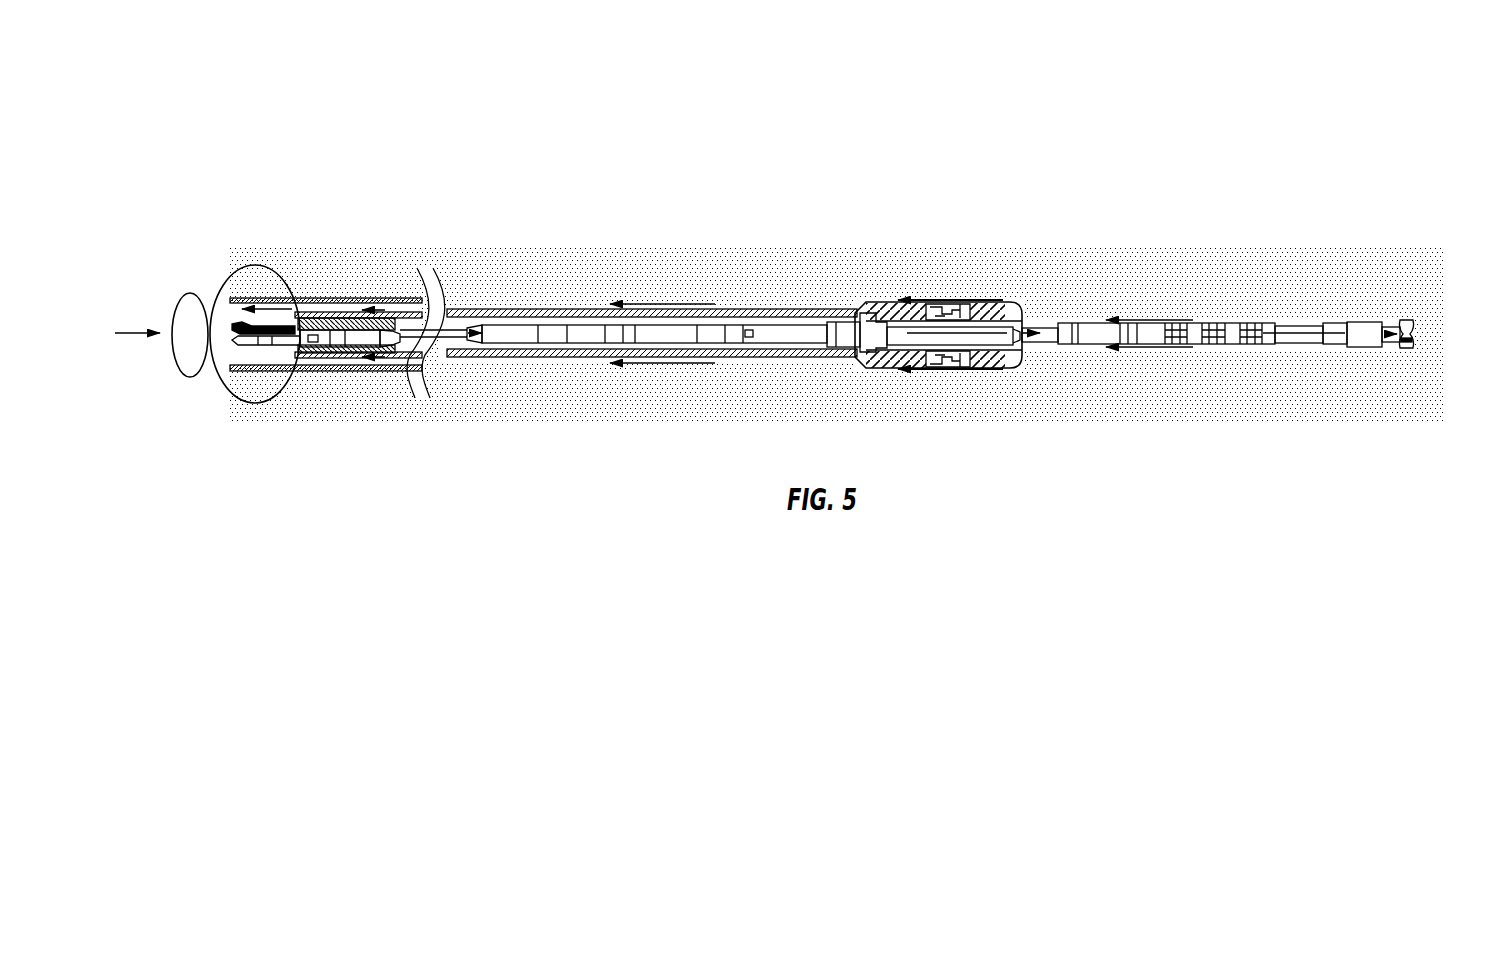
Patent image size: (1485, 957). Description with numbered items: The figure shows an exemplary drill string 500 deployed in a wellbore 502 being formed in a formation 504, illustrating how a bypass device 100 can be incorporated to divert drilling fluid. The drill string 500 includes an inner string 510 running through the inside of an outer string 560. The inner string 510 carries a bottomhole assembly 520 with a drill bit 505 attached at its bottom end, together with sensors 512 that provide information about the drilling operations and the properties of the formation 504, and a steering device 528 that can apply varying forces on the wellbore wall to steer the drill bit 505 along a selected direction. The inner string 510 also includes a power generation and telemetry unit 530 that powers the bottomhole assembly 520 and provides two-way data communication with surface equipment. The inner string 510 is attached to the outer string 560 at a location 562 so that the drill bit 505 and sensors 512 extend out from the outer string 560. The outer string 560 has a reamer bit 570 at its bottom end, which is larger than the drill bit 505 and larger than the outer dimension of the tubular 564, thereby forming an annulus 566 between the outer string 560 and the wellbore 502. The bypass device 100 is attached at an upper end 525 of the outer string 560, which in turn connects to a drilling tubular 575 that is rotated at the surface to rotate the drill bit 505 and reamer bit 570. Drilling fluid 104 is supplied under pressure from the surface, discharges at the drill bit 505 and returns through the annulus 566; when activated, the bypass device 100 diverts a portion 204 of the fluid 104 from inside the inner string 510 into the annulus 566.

The drill string 500 is at (302, 92).
The drilling tubular 575 is at (190, 293).
The drilling fluid 104 is at (133, 332).
The bypass device 100 is at (260, 268).
The portion of the fluid 204 is at (296, 292).
The formation 504 is at (417, 268).
The outer string 560 is at (545, 303).
The wellbore 502 is at (733, 302).
The annulus 566 is at (788, 302).
The tubular 564 is at (863, 302).
The location 562 is at (937, 302).
The reamer bit 570 is at (1007, 302).
The sensors 512 is at (1145, 330).
The steering device 528 is at (1302, 322).
The drill bit 505 is at (1405, 320).
The upper end of the outer string 525 is at (250, 347).
The power generation and telemetry unit 530 is at (508, 338).
The inner string 510 is at (775, 345).
The bottomhole assembly 520 is at (1223, 352).